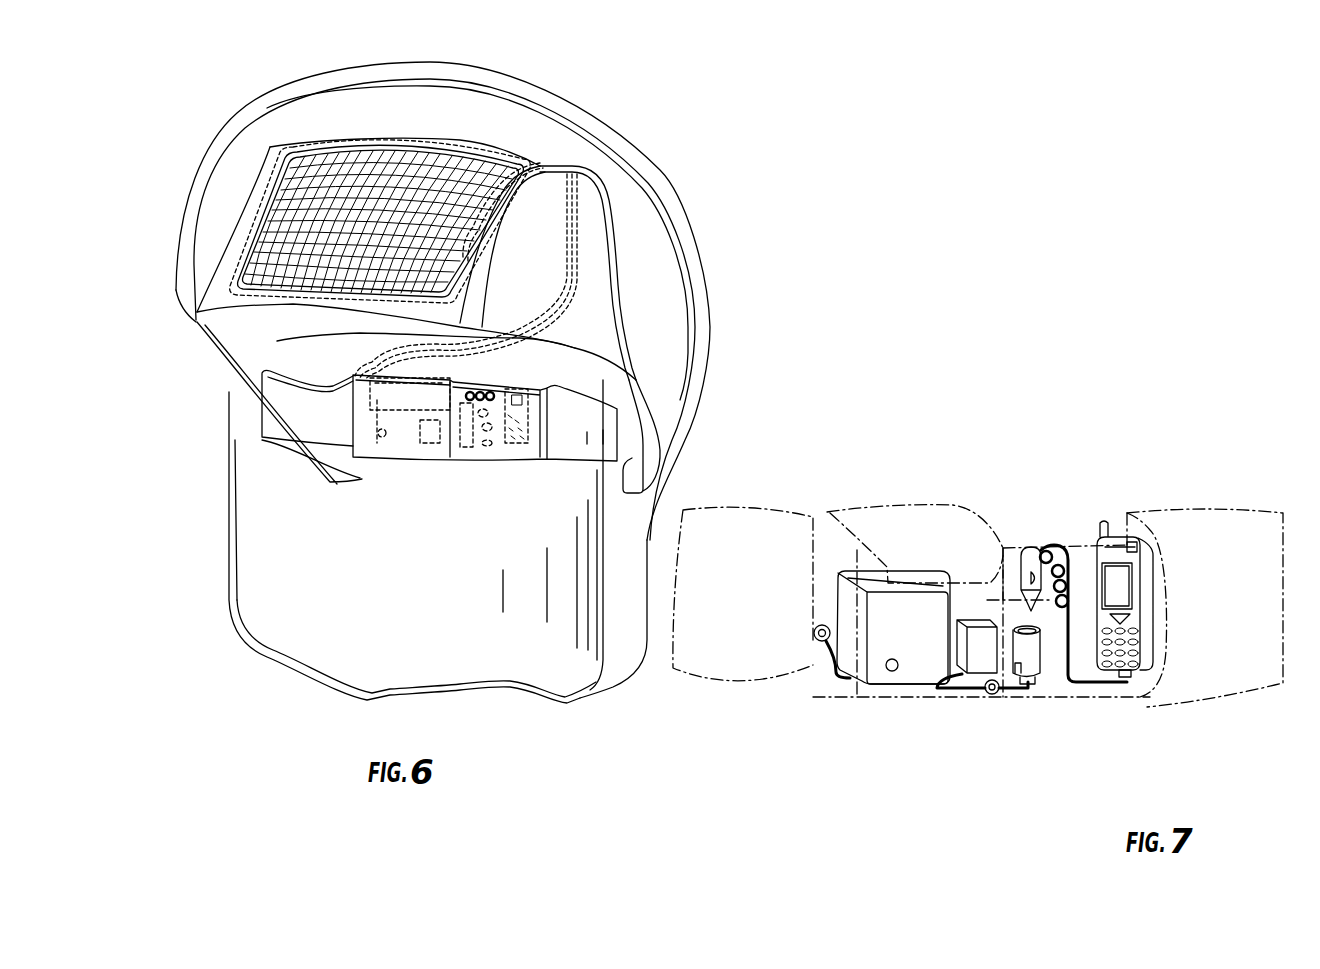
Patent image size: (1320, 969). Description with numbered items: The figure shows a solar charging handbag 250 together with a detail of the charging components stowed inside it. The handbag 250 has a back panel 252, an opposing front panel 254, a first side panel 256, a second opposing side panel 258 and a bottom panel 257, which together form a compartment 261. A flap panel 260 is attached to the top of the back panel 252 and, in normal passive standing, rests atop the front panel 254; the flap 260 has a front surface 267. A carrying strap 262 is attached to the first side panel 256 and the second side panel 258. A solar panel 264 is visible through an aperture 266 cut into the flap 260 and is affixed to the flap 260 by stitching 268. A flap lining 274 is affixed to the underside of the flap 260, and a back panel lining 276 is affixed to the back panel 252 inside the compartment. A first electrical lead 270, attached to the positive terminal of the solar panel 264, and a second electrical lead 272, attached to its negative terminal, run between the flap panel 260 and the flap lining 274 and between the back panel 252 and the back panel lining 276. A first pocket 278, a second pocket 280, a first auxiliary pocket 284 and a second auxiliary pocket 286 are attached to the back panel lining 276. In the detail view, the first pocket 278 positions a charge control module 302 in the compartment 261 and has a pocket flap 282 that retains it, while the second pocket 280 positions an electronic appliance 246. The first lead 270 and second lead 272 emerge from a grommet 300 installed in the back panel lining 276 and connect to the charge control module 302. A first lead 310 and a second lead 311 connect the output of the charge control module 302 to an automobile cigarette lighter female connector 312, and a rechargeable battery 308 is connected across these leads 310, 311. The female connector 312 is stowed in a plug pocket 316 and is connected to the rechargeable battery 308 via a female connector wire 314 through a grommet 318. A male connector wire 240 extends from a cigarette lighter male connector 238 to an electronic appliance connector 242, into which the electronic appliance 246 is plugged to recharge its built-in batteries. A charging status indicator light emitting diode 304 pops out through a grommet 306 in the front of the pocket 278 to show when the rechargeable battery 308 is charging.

In FIG. 7, the cigarette lighter male connector 238 is at (1025, 545).
In FIG. 7, the male connector wire 240 is at (1058, 548).
In FIG. 7, the electronic appliance connector 242 is at (1150, 670).
In FIG. 7, the electronic appliance 246 is at (1150, 617).
In FIG. 6, the solar charging handbag 250 is at (225, 540).
In FIG. 6, the back panel 252 is at (638, 378).
In FIG. 6, the front panel 254 is at (503, 670).
In FIG. 6, the first side panel 256 is at (223, 387).
In FIG. 6, the bottom panel 257 is at (330, 695).
In FIG. 6, the second opposing side panel 258 is at (612, 690).
In FIG. 6, the flap panel 260 is at (232, 223).
In FIG. 6, the compartment 261 is at (635, 425).
In FIG. 6, the carrying strap 262 is at (570, 108).
In FIG. 6, the solar panel 264 is at (395, 180).
In FIG. 6, the aperture 266 is at (462, 148).
In FIG. 6, the front surface 267 is at (280, 160).
In FIG. 6, the stitching 268 is at (350, 145).
In FIG. 6, the first electrical lead 270 is at (580, 250).
In FIG. 7, the first electrical lead 270 is at (808, 697).
In FIG. 6, the second electrical lead 272 is at (577, 281).
In FIG. 7, the second electrical lead 272 is at (820, 697).
In FIG. 6, the flap lining 274 is at (613, 215).
In FIG. 6, the back panel lining 276 is at (573, 352).
In FIG. 7, the back panel lining 276 is at (1084, 532).
In FIG. 6, the first pocket 278 is at (320, 481).
In FIG. 7, the first pocket 278 is at (833, 697).
In FIG. 6, the second pocket 280 is at (560, 427).
In FIG. 7, the second pocket 280 is at (1143, 697).
In FIG. 6, the pocket flap 282 is at (262, 437).
In FIG. 7, the pocket flap 282 is at (986, 515).
In FIG. 6, the first auxiliary pocket 284 is at (240, 353).
In FIG. 7, the first auxiliary pocket 284 is at (733, 687).
In FIG. 6, the second auxiliary pocket 286 is at (610, 393).
In FIG. 7, the second auxiliary pocket 286 is at (1213, 530).
In FIG. 7, the grommet 300 is at (818, 640).
In FIG. 7, the charge control module 302 is at (920, 697).
In FIG. 7, the charging status indicator light emitting diode 304 is at (890, 672).
In FIG. 7, the grommet 306 is at (883, 697).
In FIG. 7, the rechargeable battery 308 is at (973, 697).
In FIG. 7, the first lead 310 is at (1000, 697).
In FIG. 7, the second lead 311 is at (950, 697).
In FIG. 7, the automobile cigarette lighter female connector 312 is at (1053, 697).
In FIG. 7, the female connector wire 314 is at (1030, 697).
In FIG. 7, the plug pocket 316 is at (1070, 697).
In FIG. 7, the grommet 318 is at (1020, 697).